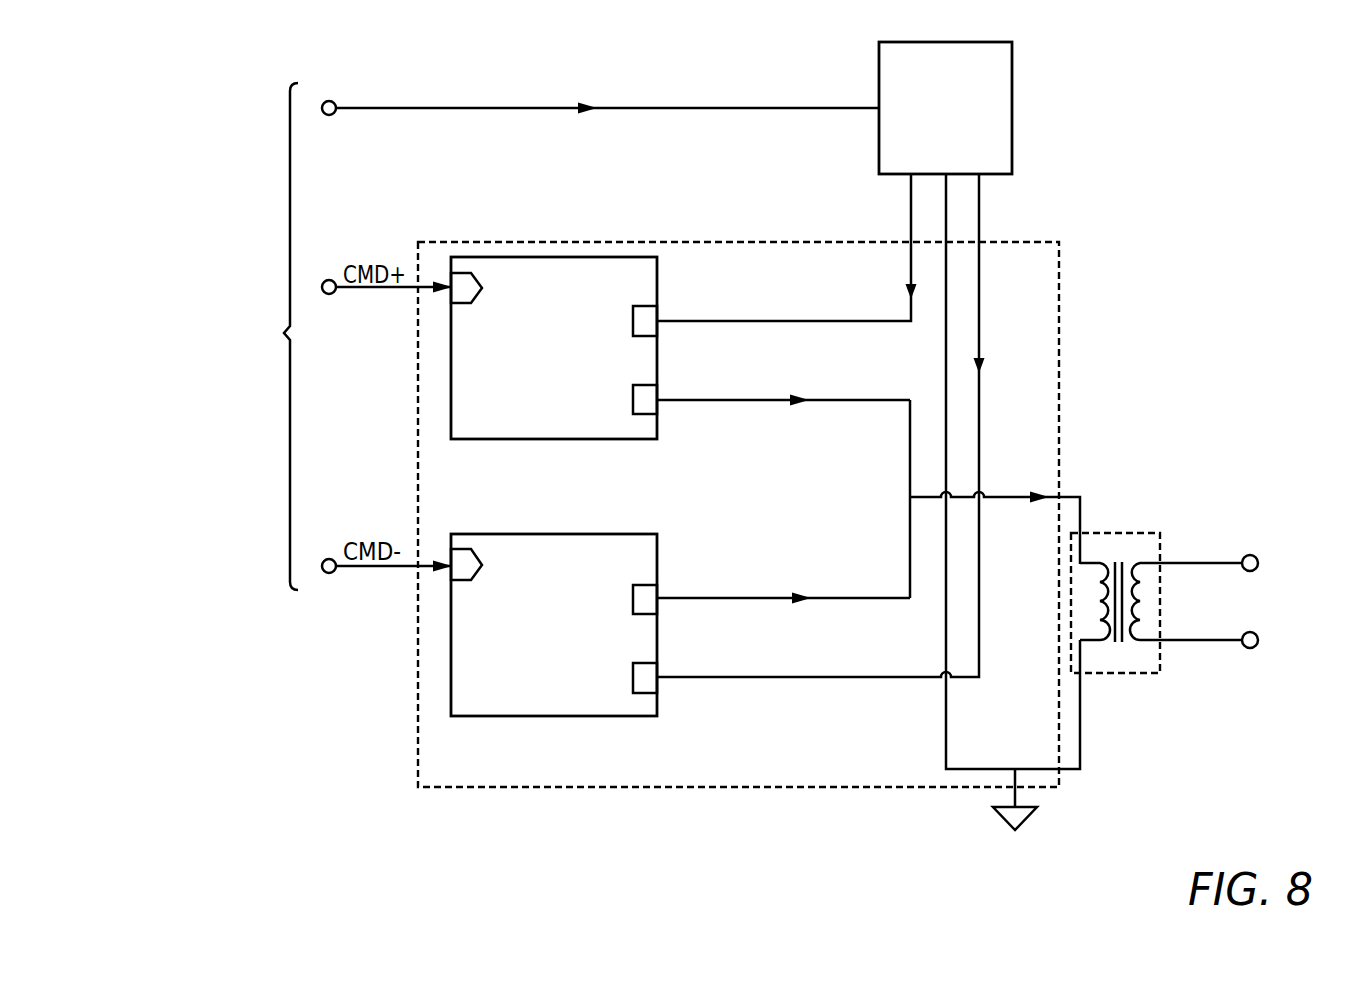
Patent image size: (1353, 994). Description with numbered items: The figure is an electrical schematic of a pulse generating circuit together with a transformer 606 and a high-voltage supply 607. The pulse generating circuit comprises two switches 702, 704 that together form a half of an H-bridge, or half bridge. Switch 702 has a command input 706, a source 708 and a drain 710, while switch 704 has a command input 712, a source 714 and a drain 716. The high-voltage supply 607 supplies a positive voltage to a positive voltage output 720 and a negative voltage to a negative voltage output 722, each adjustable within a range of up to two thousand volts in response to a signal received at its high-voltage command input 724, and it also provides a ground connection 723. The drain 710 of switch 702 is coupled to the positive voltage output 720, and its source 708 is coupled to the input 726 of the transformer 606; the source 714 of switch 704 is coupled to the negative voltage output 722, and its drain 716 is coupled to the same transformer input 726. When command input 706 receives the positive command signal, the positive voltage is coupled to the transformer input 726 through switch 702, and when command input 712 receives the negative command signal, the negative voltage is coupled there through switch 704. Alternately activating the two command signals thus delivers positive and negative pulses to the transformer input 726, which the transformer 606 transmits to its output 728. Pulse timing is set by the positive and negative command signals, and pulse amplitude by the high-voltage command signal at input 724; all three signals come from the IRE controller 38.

The IRE controller 38 is at (159, 394).
The transformer 606 is at (1127, 533).
The high-voltage supply 607 is at (1013, 106).
The switch 702 is at (548, 257).
The switch 704 is at (548, 716).
The command input 706 is at (459, 258).
The source 708 is at (650, 415).
The drain 710 is at (645, 305).
The command input 712 is at (459, 534).
The source 714 is at (651, 694).
The drain 716 is at (645, 584).
The positive voltage output 720 is at (910, 282).
The negative voltage output 722 is at (980, 225).
The ground connection 723 is at (945, 361).
The high-voltage command input 724 is at (778, 109).
The transformer input 726 is at (1027, 495).
The transformer output 728 is at (1250, 555).